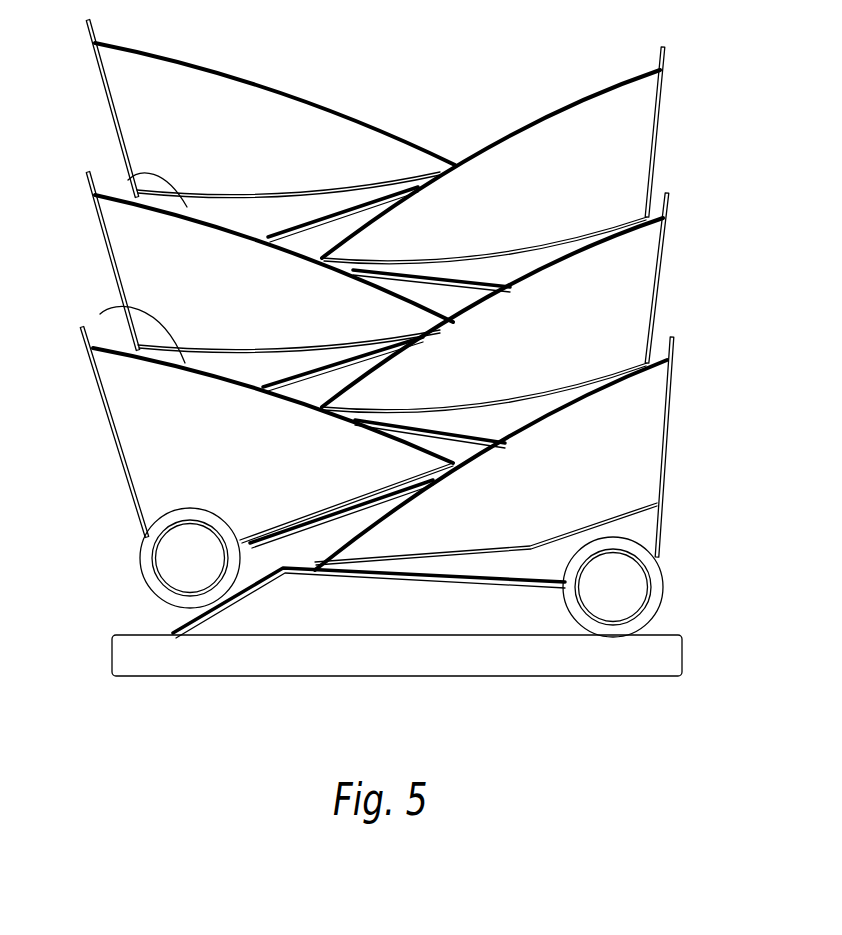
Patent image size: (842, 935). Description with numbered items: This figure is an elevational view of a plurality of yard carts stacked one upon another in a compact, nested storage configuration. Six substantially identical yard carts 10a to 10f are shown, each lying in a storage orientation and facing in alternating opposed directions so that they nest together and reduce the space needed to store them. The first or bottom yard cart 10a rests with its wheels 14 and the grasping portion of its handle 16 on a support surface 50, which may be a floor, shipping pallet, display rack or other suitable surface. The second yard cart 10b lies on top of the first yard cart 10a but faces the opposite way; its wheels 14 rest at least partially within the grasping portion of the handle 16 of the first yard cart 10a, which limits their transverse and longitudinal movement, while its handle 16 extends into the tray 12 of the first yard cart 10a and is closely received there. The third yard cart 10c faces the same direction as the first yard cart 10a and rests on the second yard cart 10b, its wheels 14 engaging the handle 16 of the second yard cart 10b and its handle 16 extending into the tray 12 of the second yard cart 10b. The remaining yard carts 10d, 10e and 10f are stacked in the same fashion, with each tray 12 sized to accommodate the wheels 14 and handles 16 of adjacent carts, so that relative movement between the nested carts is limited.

The first yard cart 10a is at (670, 490).
The second yard cart 10b is at (114, 487).
The third yard cart 10c is at (668, 310).
The fourth yard cart 10d is at (104, 276).
The fifth yard cart 10e is at (668, 148).
The sixth yard cart 10f is at (106, 125).
The tray 12 is at (100, 66).
The wheels 14 is at (130, 178).
The handle 16 is at (325, 212).
The support surface 50 is at (388, 632).